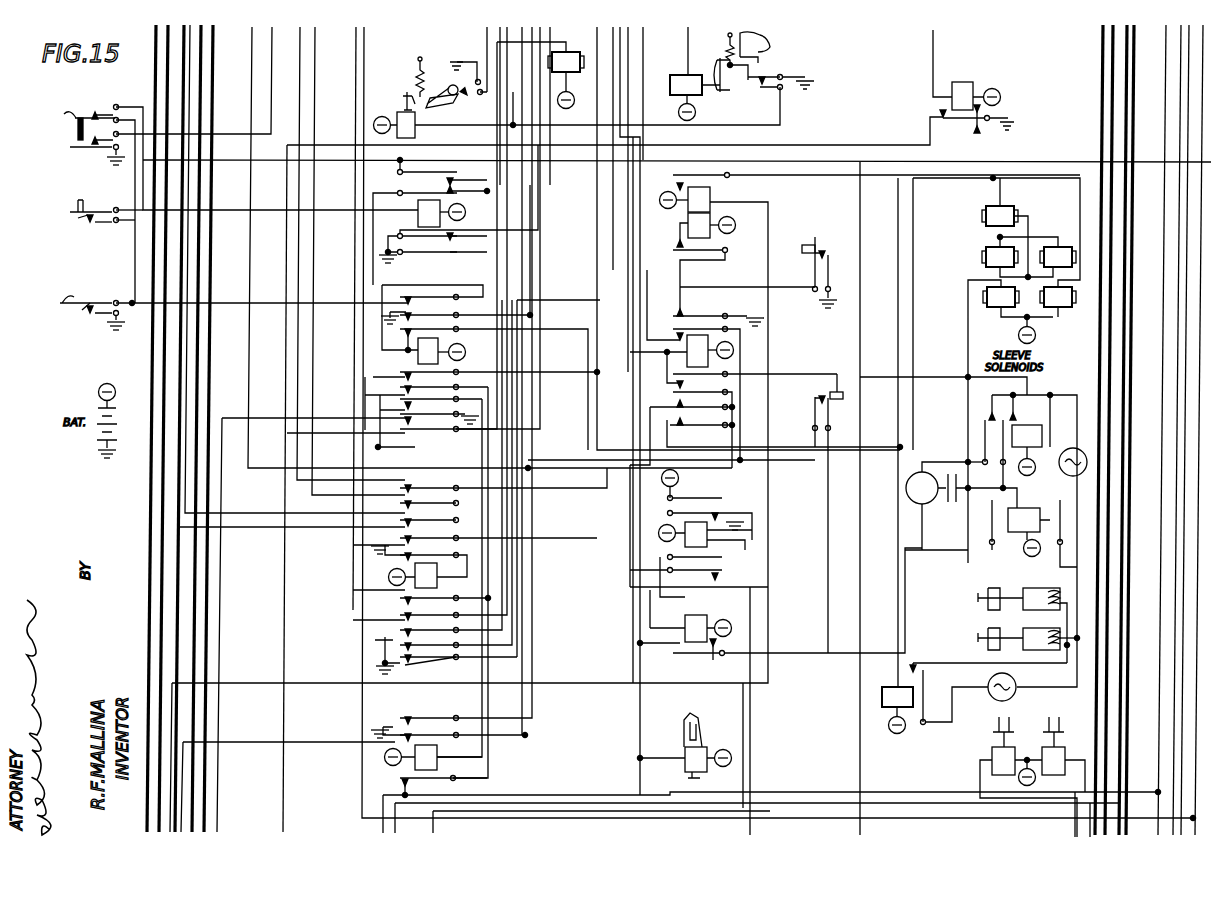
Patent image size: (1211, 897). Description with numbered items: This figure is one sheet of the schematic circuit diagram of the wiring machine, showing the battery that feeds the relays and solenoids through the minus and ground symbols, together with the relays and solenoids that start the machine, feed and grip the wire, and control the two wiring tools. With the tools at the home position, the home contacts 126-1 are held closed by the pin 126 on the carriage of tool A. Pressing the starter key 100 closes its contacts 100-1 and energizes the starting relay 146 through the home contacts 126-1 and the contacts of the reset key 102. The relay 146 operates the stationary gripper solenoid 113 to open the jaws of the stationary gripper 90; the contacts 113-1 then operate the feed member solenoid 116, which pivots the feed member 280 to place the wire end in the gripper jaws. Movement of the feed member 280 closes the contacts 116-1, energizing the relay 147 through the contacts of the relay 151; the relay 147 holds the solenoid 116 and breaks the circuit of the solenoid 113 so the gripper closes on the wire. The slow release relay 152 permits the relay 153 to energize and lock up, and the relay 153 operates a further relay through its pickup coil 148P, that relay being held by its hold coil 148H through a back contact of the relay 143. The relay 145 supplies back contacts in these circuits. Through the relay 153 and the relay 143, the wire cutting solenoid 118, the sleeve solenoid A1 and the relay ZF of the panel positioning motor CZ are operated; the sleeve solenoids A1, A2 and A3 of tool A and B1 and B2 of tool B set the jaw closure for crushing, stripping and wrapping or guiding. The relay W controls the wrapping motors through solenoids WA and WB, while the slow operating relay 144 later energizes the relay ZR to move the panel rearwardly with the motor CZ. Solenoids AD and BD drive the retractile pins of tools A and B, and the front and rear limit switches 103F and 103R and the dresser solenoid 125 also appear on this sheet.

The reset key 102 is at (68, 116).
The pin 126 is at (72, 210).
The home contacts 126-1 is at (78, 218).
The starter key 100 is at (66, 296).
The starter key contacts 100-1 is at (80, 310).
The feed member 280 is at (442, 82).
The feed member solenoid 116 is at (415, 134).
The feed member solenoid contacts 116-1 is at (472, 96).
The dresser solenoid 125 is at (557, 73).
The stationary gripper solenoid 113 is at (676, 74).
The stationary gripper solenoid contacts 113-1 is at (766, 88).
The stationary gripper 90 is at (770, 45).
The slow release relay 152 is at (968, 84).
The starting relay 146 is at (417, 218).
The relay 145 is at (440, 342).
The relay 147 is at (437, 584).
The relay 153 is at (437, 765).
The pickup coil of relay 148 148P is at (710, 194).
The hold coil of relay 148 148H is at (710, 236).
The front limit switch 103F is at (805, 250).
The rear limit switch 103R is at (838, 392).
The relay 143 is at (708, 358).
The relay 151 is at (707, 540).
The slow operating relay 144 is at (708, 622).
The wire cutting solenoid 118 is at (708, 742).
The sleeve controlling solenoid A3 is at (985, 208).
The sleeve controlling solenoid A2 is at (984, 250).
The sleeve controlling solenoid B2 is at (1061, 245).
The sleeve controlling solenoid A1 is at (994, 310).
The sleeve controlling solenoid B1 is at (1061, 310).
The panel positioning motor CZ is at (943, 462).
The relay ZF is at (1022, 479).
The relay ZR is at (1022, 514).
The wrapping motor control solenoid WA is at (1052, 588).
The wrapping motor control solenoid WB is at (1052, 628).
The relay W is at (890, 686).
The solenoid AD is at (989, 754).
The solenoid BD is at (1064, 758).